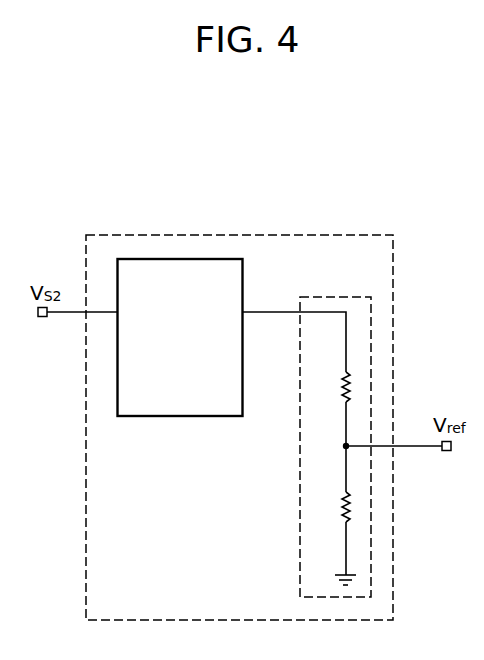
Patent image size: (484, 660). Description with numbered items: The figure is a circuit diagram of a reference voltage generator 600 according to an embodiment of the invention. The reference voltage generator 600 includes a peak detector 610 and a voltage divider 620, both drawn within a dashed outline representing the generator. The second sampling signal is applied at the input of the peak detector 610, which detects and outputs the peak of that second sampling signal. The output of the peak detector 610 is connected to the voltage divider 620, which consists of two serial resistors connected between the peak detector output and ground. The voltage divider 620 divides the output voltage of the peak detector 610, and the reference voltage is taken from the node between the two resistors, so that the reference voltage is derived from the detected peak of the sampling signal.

The reference voltage generator 600 is at (242, 235).
The peak detector 610 is at (178, 417).
The voltage divider 620 is at (372, 330).